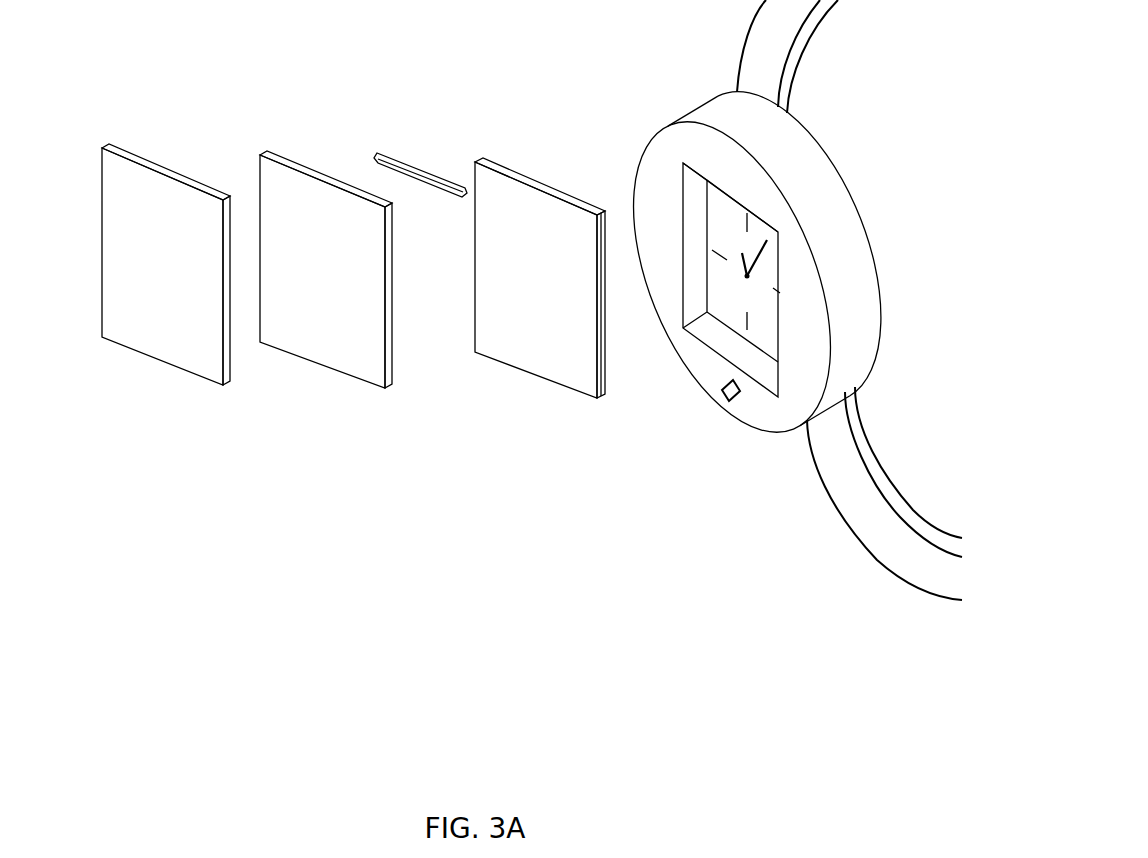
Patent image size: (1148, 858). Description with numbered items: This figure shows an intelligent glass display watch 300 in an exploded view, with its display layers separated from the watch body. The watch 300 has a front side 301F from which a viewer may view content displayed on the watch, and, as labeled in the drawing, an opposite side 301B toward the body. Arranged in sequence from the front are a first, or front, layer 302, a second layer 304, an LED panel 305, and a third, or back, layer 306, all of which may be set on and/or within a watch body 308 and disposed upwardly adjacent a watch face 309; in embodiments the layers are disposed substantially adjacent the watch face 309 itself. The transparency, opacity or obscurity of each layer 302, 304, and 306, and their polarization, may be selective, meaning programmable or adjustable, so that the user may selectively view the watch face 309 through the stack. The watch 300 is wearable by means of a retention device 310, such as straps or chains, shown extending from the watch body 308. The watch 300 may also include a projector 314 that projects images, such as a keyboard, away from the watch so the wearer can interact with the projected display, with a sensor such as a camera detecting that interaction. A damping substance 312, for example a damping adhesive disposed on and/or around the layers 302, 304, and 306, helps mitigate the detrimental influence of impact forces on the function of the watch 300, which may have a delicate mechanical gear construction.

The intelligent glass display watch 300 is at (348, 22).
The front side 301F is at (55, 170).
The back side 301B is at (603, 114).
The first layer 302 is at (186, 358).
The second layer 304 is at (341, 363).
The LED panel 305 is at (425, 192).
The third layer 306 is at (563, 373).
The watch body 308 is at (704, 76).
The watch face 309 is at (767, 343).
The retention device 310 is at (847, 527).
The damping substance 312 is at (692, 230).
The projector 314 is at (737, 399).